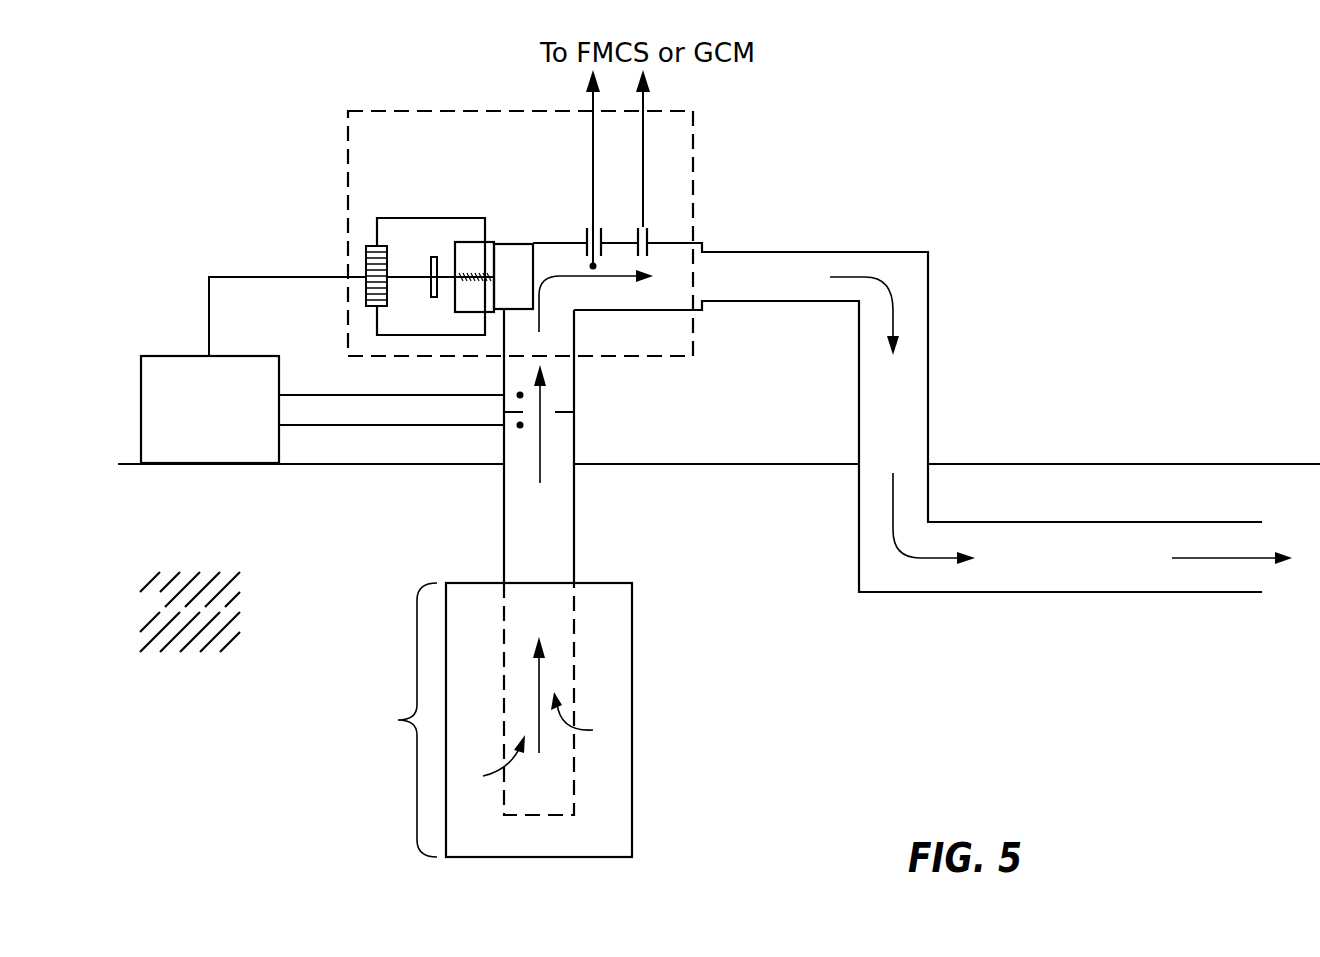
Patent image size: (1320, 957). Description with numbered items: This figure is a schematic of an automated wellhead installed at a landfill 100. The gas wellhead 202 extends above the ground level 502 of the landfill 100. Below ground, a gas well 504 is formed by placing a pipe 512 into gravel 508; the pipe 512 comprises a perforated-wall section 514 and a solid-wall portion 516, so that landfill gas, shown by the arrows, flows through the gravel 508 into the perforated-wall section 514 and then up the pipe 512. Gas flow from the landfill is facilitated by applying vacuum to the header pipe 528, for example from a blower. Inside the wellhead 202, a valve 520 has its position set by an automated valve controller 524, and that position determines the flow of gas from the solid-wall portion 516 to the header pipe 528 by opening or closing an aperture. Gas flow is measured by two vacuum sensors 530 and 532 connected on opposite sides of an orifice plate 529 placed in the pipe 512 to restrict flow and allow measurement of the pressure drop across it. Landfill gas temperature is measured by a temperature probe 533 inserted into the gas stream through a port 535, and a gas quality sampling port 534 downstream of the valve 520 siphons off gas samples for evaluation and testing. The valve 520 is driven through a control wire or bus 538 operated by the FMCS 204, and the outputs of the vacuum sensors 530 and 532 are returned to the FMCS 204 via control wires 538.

The landfill 100 is at (214, 628).
The gas wellhead 202 is at (473, 108).
The FMCS 204 is at (188, 440).
The ground level 502 is at (1142, 464).
The gas well 504 is at (390, 720).
The gravel 508 is at (635, 750).
The pipe 512 is at (602, 550).
The perforated-wall section 514 is at (575, 612).
The solid-wall portion 516 is at (577, 503).
The valve 520 is at (515, 250).
The automated valve controller 524 is at (418, 217).
The header pipe 528 is at (928, 383).
The orifice plate 529 is at (563, 412).
The vacuum sensor 530 is at (518, 393).
The vacuum sensor 532 is at (518, 427).
The temperature probe 533 is at (593, 268).
The gas quality sampling port 534 is at (643, 225).
The port 535 is at (587, 225).
The control wire or bus 538 is at (237, 275).